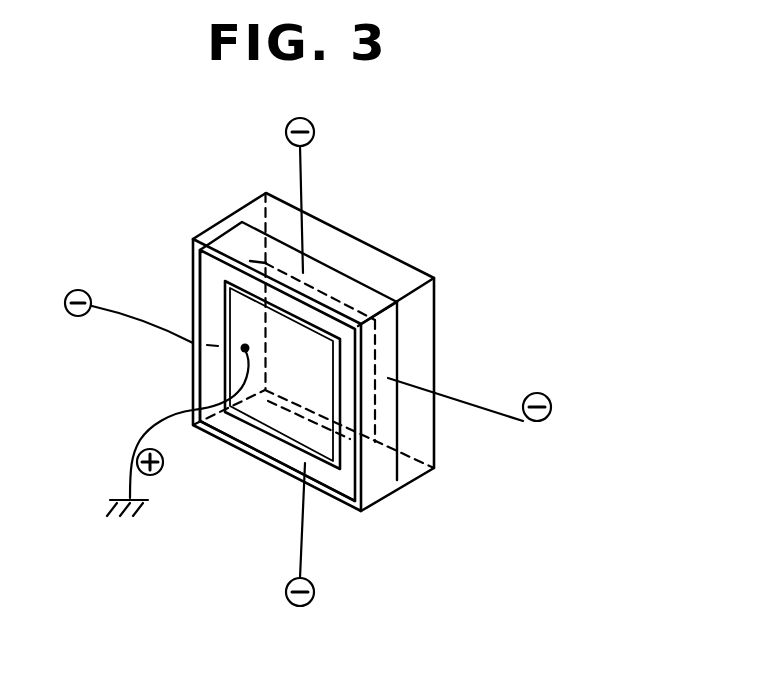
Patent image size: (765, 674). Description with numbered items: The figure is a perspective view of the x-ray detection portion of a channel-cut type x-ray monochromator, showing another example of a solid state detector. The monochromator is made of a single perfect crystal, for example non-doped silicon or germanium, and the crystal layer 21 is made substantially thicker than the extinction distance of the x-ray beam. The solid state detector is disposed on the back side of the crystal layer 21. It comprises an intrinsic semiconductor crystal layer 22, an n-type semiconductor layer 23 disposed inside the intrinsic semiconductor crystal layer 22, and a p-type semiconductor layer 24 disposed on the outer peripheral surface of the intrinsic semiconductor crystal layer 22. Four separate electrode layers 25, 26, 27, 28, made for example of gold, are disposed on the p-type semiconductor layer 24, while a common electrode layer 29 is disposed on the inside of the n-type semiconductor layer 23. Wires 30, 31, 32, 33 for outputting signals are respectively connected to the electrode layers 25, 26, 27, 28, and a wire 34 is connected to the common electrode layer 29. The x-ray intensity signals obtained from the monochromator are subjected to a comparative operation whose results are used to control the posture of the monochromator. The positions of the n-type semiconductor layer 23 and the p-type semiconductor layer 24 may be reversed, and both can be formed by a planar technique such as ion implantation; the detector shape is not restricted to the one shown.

The crystal layer 21 is at (428, 332).
The intrinsic semiconductor crystal layer 22 is at (206, 276).
The n-type semiconductor layer 23 is at (365, 482).
The p-type semiconductor layer 24 is at (250, 253).
The electrode layer 25 is at (340, 276).
The electrode layer 26 is at (388, 413).
The electrode layer 27 is at (257, 455).
The electrode layer 28 is at (191, 290).
The common electrode layer 29 is at (240, 350).
The wire 30 is at (303, 172).
The wire 31 is at (477, 397).
The wire 32 is at (304, 527).
The wire 33 is at (138, 323).
The wire 34 is at (138, 435).